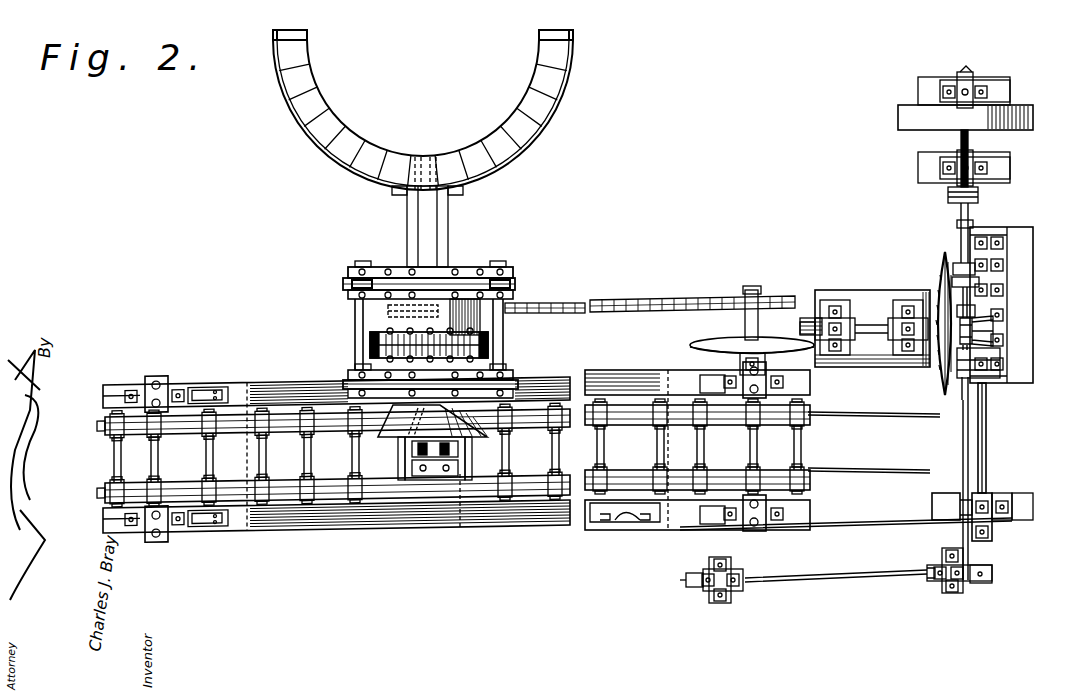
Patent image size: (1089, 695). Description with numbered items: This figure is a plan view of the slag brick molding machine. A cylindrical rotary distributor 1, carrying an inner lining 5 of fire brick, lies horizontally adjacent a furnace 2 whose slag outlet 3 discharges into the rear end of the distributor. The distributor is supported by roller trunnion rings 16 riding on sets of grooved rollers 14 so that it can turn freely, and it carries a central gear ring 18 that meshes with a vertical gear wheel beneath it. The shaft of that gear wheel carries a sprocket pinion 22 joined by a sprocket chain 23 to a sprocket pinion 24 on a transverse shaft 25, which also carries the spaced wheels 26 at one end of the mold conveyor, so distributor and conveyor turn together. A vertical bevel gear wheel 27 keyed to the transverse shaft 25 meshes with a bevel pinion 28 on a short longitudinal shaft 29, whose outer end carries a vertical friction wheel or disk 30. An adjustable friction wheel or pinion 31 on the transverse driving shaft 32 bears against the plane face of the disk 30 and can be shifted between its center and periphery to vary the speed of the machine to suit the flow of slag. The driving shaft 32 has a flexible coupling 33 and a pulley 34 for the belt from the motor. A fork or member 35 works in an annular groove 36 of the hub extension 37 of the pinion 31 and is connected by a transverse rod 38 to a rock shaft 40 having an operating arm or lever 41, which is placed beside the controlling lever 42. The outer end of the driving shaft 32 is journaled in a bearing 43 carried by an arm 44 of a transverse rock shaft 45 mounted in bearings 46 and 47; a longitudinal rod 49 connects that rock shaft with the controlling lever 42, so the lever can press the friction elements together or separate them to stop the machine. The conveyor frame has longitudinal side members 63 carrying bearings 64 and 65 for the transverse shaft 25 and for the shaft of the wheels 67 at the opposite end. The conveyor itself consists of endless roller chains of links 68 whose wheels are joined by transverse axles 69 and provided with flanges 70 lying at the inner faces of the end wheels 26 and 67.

The rotary distributor 1 is at (388, 311).
The furnace 2 is at (548, 104).
The slag outlet 3 is at (442, 226).
The inner lining 5 is at (432, 442).
The grooved rollers 14 is at (348, 287).
The roller trunnion rings 16 is at (440, 275).
The gear ring 18 is at (370, 345).
The sprocket pinion 22 is at (400, 318).
The sprocket chain 23 is at (650, 300).
The sprocket pinion 24 is at (762, 298).
The transverse shaft 25 is at (752, 288).
The spaced wheels 26 is at (812, 413).
The vertical bevel gear wheel 27 is at (722, 341).
The bevel pinion 28 is at (800, 326).
The short longitudinal shaft 29 is at (862, 325).
The friction wheel or disk 30 is at (940, 285).
The adjustable friction wheel or pinion 31 is at (979, 283).
The driving or power shaft 32 is at (970, 214).
The flexible coupling 33 is at (948, 197).
The pulley 34 is at (1025, 121).
The fork or member 35 is at (975, 270).
The annular groove 36 is at (988, 262).
The hub extension 37 is at (960, 250).
The transverse rod 38 is at (963, 446).
The rock shaft 40 is at (846, 574).
The operating arm or lever 41 is at (686, 583).
The controlling or operating lever 42 is at (618, 525).
The bearing 43 is at (975, 312).
The arm 44 is at (994, 330).
The transverse rock shaft 45 is at (987, 430).
The bearing 46 is at (1002, 372).
The bearing 47 is at (994, 490).
The longitudinal rod 49 is at (903, 524).
The longitudinal side members 63 is at (312, 527).
The bearing 64 is at (170, 541).
The bearing 65 is at (750, 530).
The wheels 67 is at (104, 426).
The links 68 is at (331, 475).
The transverse axles 69 is at (262, 453).
The flanges 70 is at (108, 486).